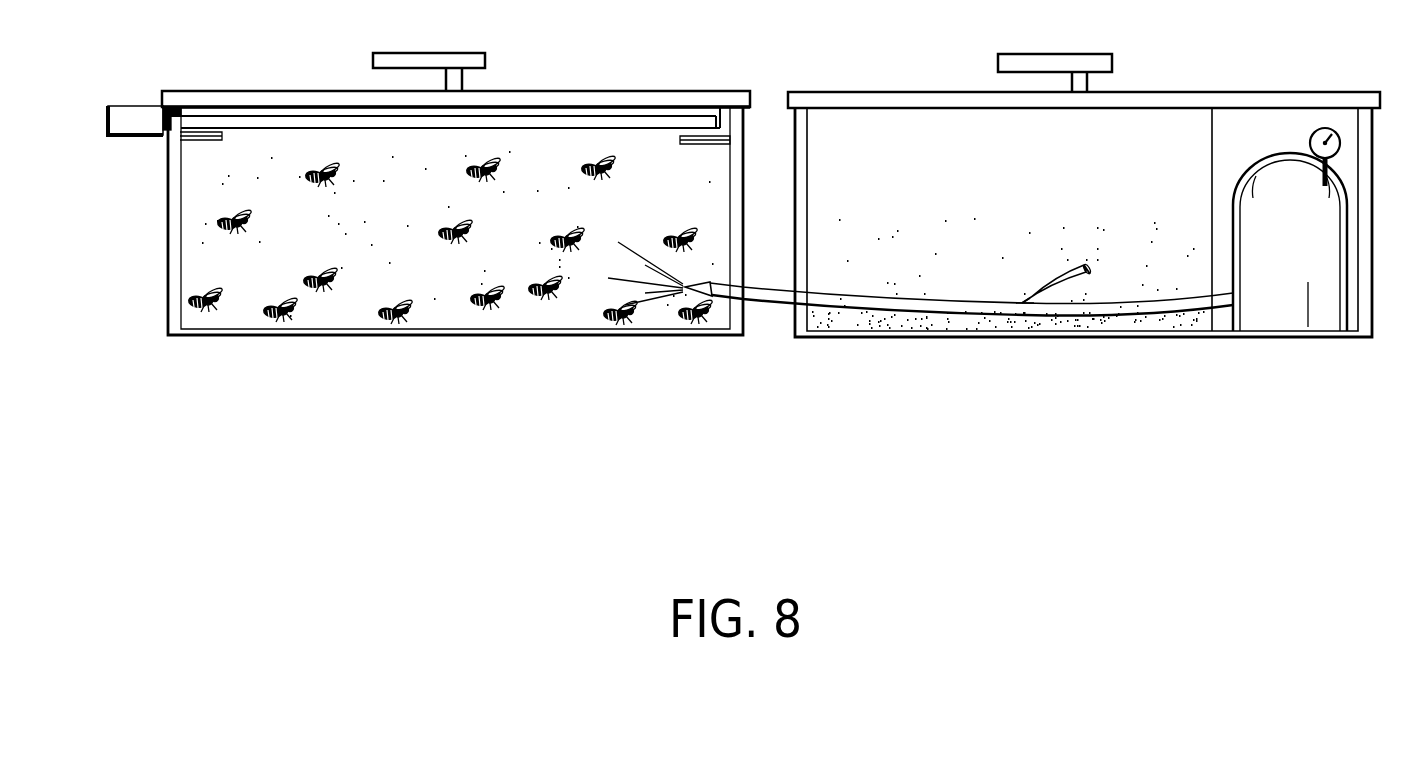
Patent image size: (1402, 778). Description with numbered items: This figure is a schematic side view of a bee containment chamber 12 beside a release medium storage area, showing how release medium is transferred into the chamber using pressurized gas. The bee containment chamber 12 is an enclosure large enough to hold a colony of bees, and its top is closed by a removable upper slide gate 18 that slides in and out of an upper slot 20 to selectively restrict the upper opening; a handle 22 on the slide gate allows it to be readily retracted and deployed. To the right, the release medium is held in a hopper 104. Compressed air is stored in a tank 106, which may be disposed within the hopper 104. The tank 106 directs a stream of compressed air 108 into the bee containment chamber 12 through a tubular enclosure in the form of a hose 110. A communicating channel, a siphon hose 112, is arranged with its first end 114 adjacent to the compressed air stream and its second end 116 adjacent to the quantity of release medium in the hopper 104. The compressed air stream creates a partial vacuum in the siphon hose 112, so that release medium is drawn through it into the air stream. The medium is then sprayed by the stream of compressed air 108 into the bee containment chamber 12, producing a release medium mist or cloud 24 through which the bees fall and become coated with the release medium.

The bee containment chamber 12 is at (278, 162).
The removable upper slide gate 18 is at (532, 120).
The upper slot 20 is at (172, 132).
The handle 22 is at (125, 108).
The mist or cloud 24 is at (357, 272).
The hopper 104 is at (888, 108).
The tank 106 is at (1308, 247).
The stream of compressed air 108 is at (650, 303).
The hose 110 is at (887, 298).
The siphon hose 112 is at (1060, 272).
The first end 114 is at (1030, 310).
The second end 116 is at (1097, 265).